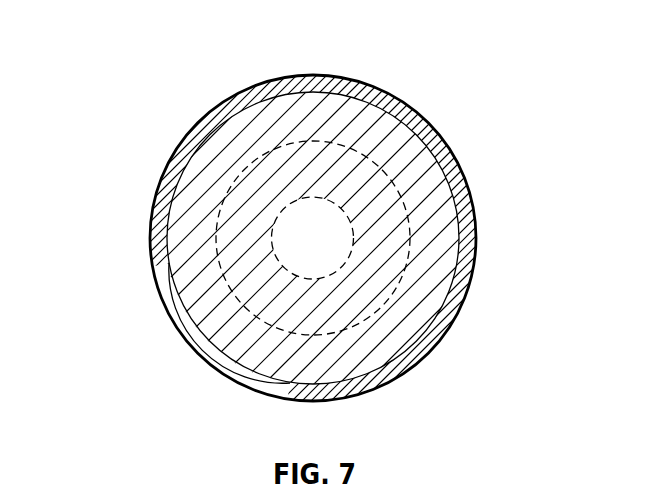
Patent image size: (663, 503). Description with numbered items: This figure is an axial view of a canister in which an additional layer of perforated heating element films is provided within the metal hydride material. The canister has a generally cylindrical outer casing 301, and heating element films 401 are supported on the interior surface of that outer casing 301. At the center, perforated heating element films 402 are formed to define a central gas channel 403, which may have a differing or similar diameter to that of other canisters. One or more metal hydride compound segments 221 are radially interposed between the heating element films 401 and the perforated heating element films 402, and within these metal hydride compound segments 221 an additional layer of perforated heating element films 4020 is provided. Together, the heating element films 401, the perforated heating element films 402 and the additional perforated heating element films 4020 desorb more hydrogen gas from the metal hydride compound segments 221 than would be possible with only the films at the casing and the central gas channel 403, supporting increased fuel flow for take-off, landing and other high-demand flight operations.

The outer casing 301 is at (183, 146).
The heating element films 401 is at (248, 93).
The metal hydride compound segments 221 is at (176, 239).
The additional perforated heating element films 4020 is at (223, 282).
The perforated heating element films 402 is at (353, 237).
The central gas channel 403 is at (305, 262).